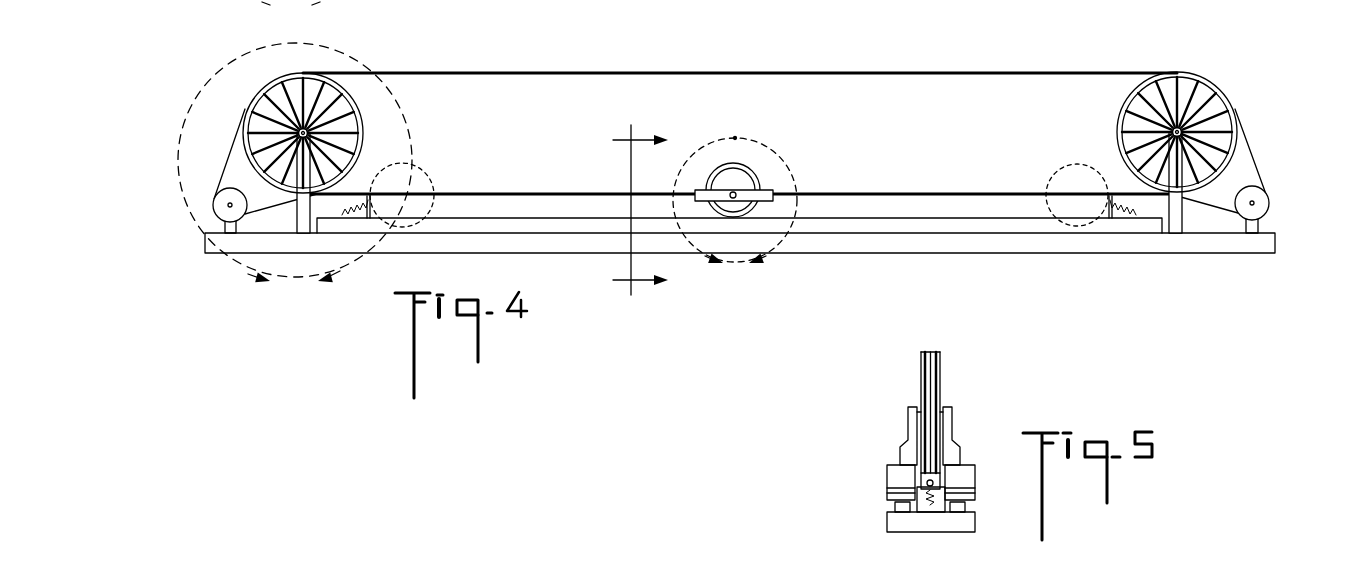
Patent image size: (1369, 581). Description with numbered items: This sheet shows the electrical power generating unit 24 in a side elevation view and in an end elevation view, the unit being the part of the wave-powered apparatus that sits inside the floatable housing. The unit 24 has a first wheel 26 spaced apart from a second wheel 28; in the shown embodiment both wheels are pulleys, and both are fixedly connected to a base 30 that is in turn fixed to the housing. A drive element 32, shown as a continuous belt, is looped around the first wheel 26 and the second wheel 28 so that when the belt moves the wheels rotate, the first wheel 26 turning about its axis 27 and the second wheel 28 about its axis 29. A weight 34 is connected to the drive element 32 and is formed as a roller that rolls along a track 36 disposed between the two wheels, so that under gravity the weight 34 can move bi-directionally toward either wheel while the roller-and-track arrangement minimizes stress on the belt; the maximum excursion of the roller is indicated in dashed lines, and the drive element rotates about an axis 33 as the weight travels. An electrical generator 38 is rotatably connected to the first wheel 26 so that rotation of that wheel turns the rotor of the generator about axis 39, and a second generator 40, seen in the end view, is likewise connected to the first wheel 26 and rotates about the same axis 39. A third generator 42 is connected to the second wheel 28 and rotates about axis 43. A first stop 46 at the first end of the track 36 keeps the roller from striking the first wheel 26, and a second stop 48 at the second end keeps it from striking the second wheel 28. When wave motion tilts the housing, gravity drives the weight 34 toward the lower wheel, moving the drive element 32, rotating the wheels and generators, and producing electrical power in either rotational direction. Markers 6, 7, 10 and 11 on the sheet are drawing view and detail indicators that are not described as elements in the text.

In FIG. 4, the view indicator 6 is at (291, 5).
In FIG. 4, the detail area 7 is at (295, 169).
In FIG. 4, the detail area 10 is at (735, 210).
In FIG. 4, the section line 11 is at (631, 210).
In FIG. 4, the electrical power generating unit 24 is at (1216, 50).
In FIG. 5, the electrical power generating unit 24 is at (851, 366).
In FIG. 4, the first wheel 26 is at (362, 125).
In FIG. 5, the first wheel 26 is at (927, 405).
In FIG. 4, the axis 27 is at (306, 131).
In FIG. 4, the second wheel 28 is at (1120, 115).
In FIG. 4, the axis 29 is at (1176, 130).
In FIG. 4, the base 30 is at (830, 243).
In FIG. 4, the drive element 32 is at (898, 74).
In FIG. 5, the drive element 32 is at (927, 350).
In FIG. 4, the axis 33 is at (736, 138).
In FIG. 4, the weight 34 is at (760, 178).
In FIG. 5, the weight 34 is at (955, 447).
In FIG. 4, the track 36 is at (476, 217).
In FIG. 4, the electrical generator 38 is at (221, 203).
In FIG. 5, the electrical generator 38 is at (962, 485).
In FIG. 4, the axis 39 is at (229, 203).
In FIG. 5, the second generator 40 is at (895, 485).
In FIG. 4, the third generator 42 is at (1262, 208).
In FIG. 4, the axis 43 is at (1253, 202).
In FIG. 4, the first stop 46 is at (368, 197).
In FIG. 4, the second stop 48 is at (1111, 195).